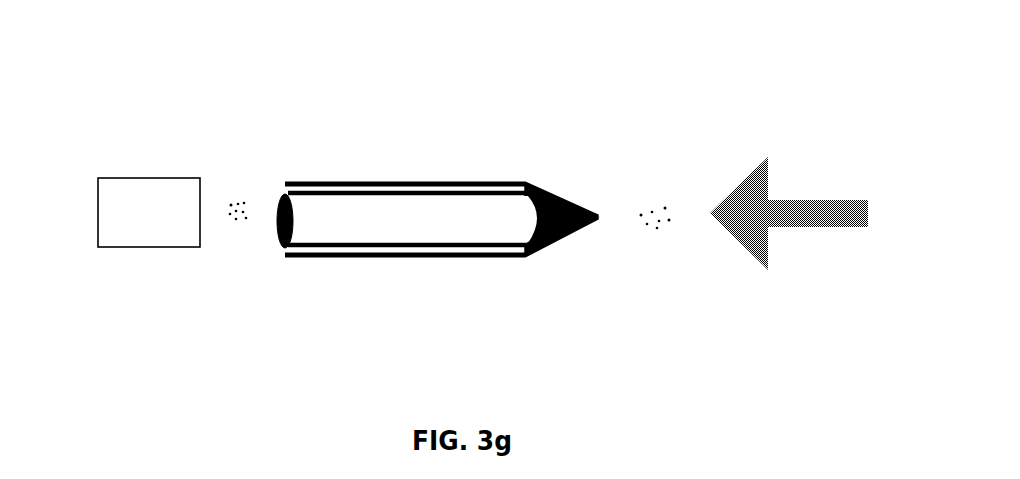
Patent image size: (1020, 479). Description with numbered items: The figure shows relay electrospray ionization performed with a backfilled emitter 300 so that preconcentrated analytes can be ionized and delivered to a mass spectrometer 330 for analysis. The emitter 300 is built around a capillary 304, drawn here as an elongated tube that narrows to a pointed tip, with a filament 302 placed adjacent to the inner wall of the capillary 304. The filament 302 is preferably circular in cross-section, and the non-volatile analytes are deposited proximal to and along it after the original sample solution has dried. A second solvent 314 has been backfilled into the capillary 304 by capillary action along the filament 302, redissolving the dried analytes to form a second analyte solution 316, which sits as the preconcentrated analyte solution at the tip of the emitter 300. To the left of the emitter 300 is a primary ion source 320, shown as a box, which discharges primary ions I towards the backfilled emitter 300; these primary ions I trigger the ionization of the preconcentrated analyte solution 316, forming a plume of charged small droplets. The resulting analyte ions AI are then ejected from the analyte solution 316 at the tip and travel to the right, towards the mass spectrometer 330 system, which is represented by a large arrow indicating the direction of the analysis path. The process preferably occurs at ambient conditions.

The emitter 300 is at (393, 190).
The filament 302 is at (394, 166).
The capillary 304 is at (441, 185).
The second solvent 314 is at (240, 270).
The second analyte solution 316 is at (523, 258).
The primary ion source 320 is at (115, 265).
The mass spectrometer 330 is at (789, 244).
The primary ions I is at (201, 177).
The analyte ions AI is at (693, 156).